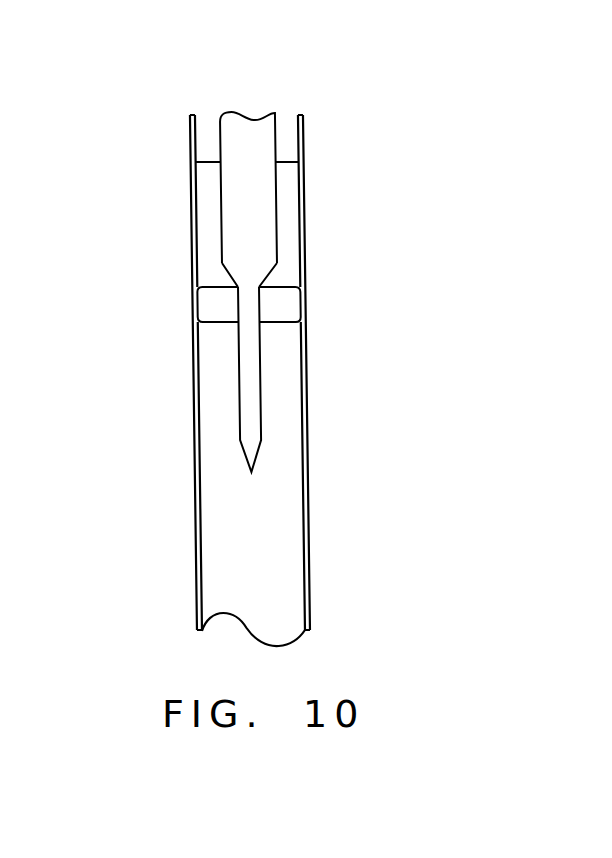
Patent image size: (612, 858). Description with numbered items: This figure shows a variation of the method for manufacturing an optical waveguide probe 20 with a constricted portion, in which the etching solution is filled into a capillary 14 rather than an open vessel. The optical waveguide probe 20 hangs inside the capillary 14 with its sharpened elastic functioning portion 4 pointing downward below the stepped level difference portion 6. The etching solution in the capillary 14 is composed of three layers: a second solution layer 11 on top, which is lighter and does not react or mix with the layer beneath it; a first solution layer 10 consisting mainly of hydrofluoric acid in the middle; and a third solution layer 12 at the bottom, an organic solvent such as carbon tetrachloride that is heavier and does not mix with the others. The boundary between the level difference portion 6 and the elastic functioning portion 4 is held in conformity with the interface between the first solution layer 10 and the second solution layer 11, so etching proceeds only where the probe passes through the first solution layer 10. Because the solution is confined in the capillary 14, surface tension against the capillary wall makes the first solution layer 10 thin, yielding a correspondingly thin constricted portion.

The capillary 14 is at (194, 481).
The second solution layer 11 is at (293, 232).
The third solution layer 12 is at (282, 415).
The optical waveguide probe 20 is at (235, 123).
The level difference portion 6 is at (225, 275).
The elastic functioning portion 4 is at (238, 338).
The first solution layer 10 is at (288, 307).